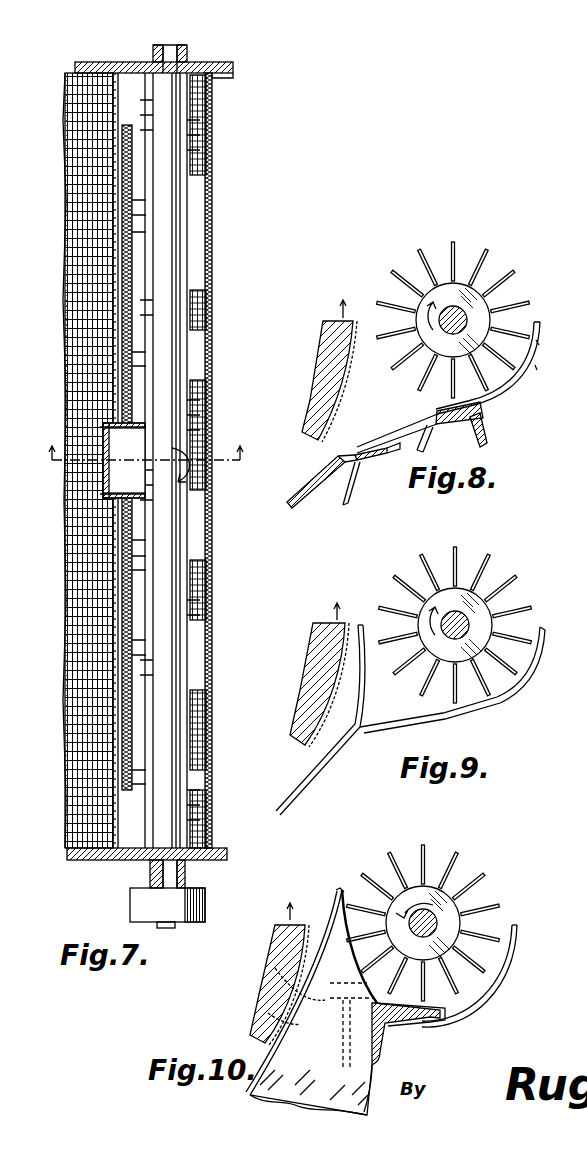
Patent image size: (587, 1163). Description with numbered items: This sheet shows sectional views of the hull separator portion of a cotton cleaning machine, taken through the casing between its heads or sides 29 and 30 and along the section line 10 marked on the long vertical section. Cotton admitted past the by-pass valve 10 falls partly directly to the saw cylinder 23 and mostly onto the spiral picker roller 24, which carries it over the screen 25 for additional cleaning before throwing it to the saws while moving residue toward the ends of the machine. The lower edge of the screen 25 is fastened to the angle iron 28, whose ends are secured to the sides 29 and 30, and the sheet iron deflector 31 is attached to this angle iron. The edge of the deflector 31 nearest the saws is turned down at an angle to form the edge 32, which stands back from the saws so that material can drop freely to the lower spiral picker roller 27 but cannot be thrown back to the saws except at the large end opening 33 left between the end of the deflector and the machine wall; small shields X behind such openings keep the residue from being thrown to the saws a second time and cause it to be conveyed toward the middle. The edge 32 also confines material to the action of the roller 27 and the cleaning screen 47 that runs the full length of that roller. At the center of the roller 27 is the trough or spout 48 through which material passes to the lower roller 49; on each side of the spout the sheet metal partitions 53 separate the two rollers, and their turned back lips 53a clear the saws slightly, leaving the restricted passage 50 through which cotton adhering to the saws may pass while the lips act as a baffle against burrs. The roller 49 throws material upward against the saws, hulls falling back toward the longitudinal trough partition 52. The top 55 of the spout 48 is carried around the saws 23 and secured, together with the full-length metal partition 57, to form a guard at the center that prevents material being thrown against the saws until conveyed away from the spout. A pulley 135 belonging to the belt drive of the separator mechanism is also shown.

In FIG. 7, the section line 10- 10 is at (138, 444).
In FIG. 7, the blade 23 is at (72, 380).
In FIG. 8, the blade 23 is at (340, 393).
In FIG. 9, the blade 23 is at (312, 674).
In FIG. 10, the blade 23 is at (265, 985).
In FIG. 8, the rotary brush wheel 24 is at (480, 310).
In FIG. 8, the curved guide plate 25 is at (515, 380).
In FIG. 7, the inner tube 27 is at (178, 296).
In FIG. 10, the inner tube 27 is at (455, 916).
In FIG. 8, the support block 28 is at (473, 432).
In FIG. 7, the top plate 29 is at (218, 68).
In FIG. 7, the bottom plate 30 is at (90, 866).
In FIG. 8, the hatched plate portion 31 is at (370, 447).
In FIG. 7, the strip 32 is at (128, 203).
In FIG. 8, the strip 32 is at (343, 505).
In FIG. 8, the bar 33 is at (400, 445).
In FIG. 7, the outer wall 47 is at (200, 172).
In FIG. 10, the outer wall 47 is at (510, 962).
In FIG. 7, the housing box 48 is at (110, 480).
In FIG. 10, the housing box 48 is at (265, 1100).
In FIG. 9, the rotary brush wheel 49 is at (478, 602).
In FIG. 10, the bristle line 50 is at (275, 968).
In FIG. 10, the body portion 52 is at (311, 1090).
In FIG. 7, the brush 53 is at (118, 70).
In FIG. 10, the brush 53 is at (385, 980).
In FIG. 7, the brush bristles 53a is at (112, 128).
In FIG. 10, the brush bristles 53a is at (266, 1013).
In FIG. 7, the plate 55 is at (110, 436).
In FIG. 8, the plate 55 is at (312, 480).
In FIG. 9, the plate 55 is at (358, 690).
In FIG. 10, the plate 55 is at (322, 908).
In FIG. 9, the plate 57 is at (372, 730).
In FIG. 7, the knob 135 is at (138, 904).
In FIG. 8, the point X is at (437, 425).